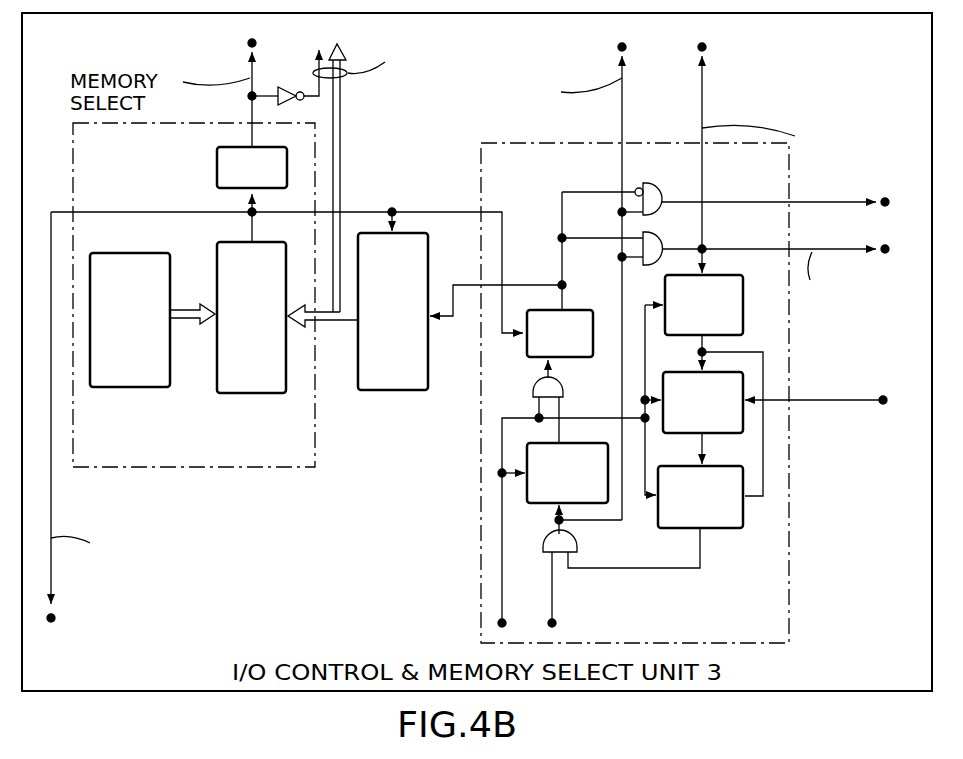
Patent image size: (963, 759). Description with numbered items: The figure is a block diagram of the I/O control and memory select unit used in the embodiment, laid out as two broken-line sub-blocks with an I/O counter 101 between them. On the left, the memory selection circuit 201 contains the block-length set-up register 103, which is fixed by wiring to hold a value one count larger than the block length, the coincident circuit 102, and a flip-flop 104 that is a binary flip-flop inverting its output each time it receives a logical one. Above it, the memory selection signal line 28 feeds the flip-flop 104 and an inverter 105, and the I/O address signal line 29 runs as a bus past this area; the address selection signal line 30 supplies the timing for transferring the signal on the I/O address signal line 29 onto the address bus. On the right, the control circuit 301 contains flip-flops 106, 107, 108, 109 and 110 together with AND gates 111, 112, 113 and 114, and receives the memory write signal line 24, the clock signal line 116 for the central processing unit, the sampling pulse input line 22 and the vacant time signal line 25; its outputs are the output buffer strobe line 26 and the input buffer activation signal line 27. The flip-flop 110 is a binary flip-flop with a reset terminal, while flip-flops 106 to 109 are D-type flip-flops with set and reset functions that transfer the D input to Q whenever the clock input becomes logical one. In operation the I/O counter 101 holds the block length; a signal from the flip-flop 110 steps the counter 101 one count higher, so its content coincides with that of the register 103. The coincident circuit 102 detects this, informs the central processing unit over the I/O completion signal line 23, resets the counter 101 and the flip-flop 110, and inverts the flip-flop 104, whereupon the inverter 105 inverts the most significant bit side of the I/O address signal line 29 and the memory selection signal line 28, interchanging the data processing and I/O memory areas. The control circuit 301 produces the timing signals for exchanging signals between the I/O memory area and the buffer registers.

The memory selection signal line 28 is at (250, 60).
The inverter 105 is at (283, 86).
The I/O address signal line 29 is at (342, 93).
The address selection signal line 30 is at (622, 108).
The memory write signal line 24 is at (702, 108).
The output buffer strobe line 26 is at (854, 202).
The input buffer activation signal line 27 is at (843, 250).
The sampling pulse input line 22 is at (813, 400).
The I/O completion signal line 23 is at (51, 582).
The vacant time signal line 25 is at (552, 606).
The flip-flop 104 is at (215, 168).
The block-length set-up register 103 is at (152, 387).
The coincident circuit 102 is at (235, 393).
The I/O counter 101 is at (392, 390).
The memory selection circuit 201 is at (237, 467).
The control circuit 301 is at (480, 526).
The flip-flop 110 is at (584, 308).
The AND gate 112 is at (563, 389).
The flip-flop 109 is at (572, 443).
The AND gate 111 is at (578, 541).
The clock signal line 116 is at (502, 578).
The flip-flop 106 is at (735, 275).
The flip-flop 107 is at (708, 433).
The flip-flop 108 is at (754, 528).
The AND gate 113 is at (650, 232).
The AND gate 114 is at (651, 183).